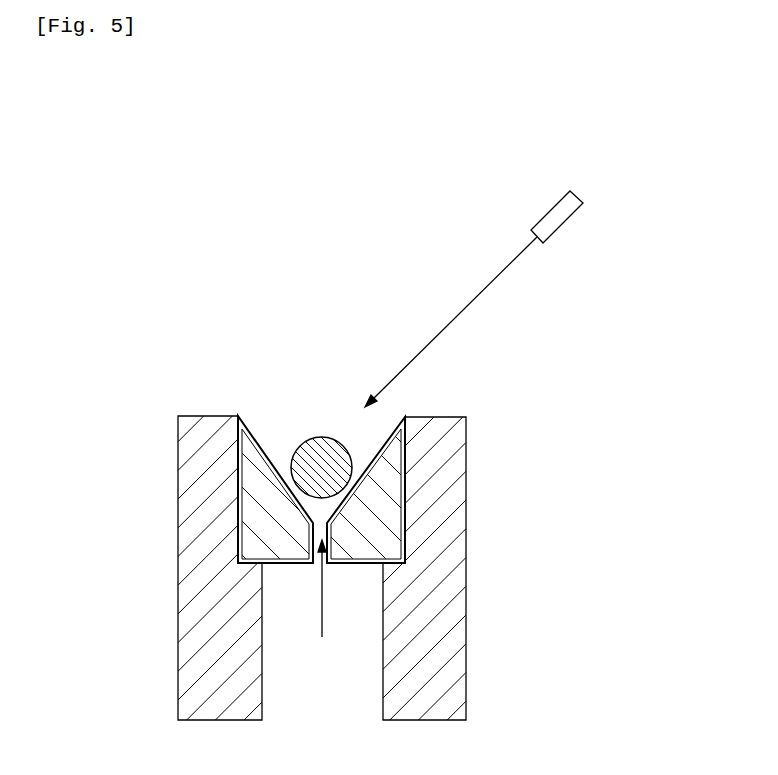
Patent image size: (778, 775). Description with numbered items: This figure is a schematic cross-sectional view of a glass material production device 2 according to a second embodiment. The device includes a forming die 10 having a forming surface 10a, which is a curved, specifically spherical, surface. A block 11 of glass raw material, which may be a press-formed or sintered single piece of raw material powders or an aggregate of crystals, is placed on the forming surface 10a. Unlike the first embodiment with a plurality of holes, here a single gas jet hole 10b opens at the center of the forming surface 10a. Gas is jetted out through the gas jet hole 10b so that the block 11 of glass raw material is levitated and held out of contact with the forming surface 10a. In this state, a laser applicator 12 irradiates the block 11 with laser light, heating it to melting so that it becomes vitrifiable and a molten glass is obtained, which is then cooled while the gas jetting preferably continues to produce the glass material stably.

The glass material production device 2 is at (413, 278).
The forming die 10 is at (259, 450).
The forming surface 10a is at (273, 459).
The gas jet hole 10b is at (318, 533).
The block of glass raw material 11 is at (331, 436).
The laser applicator 12 is at (558, 229).